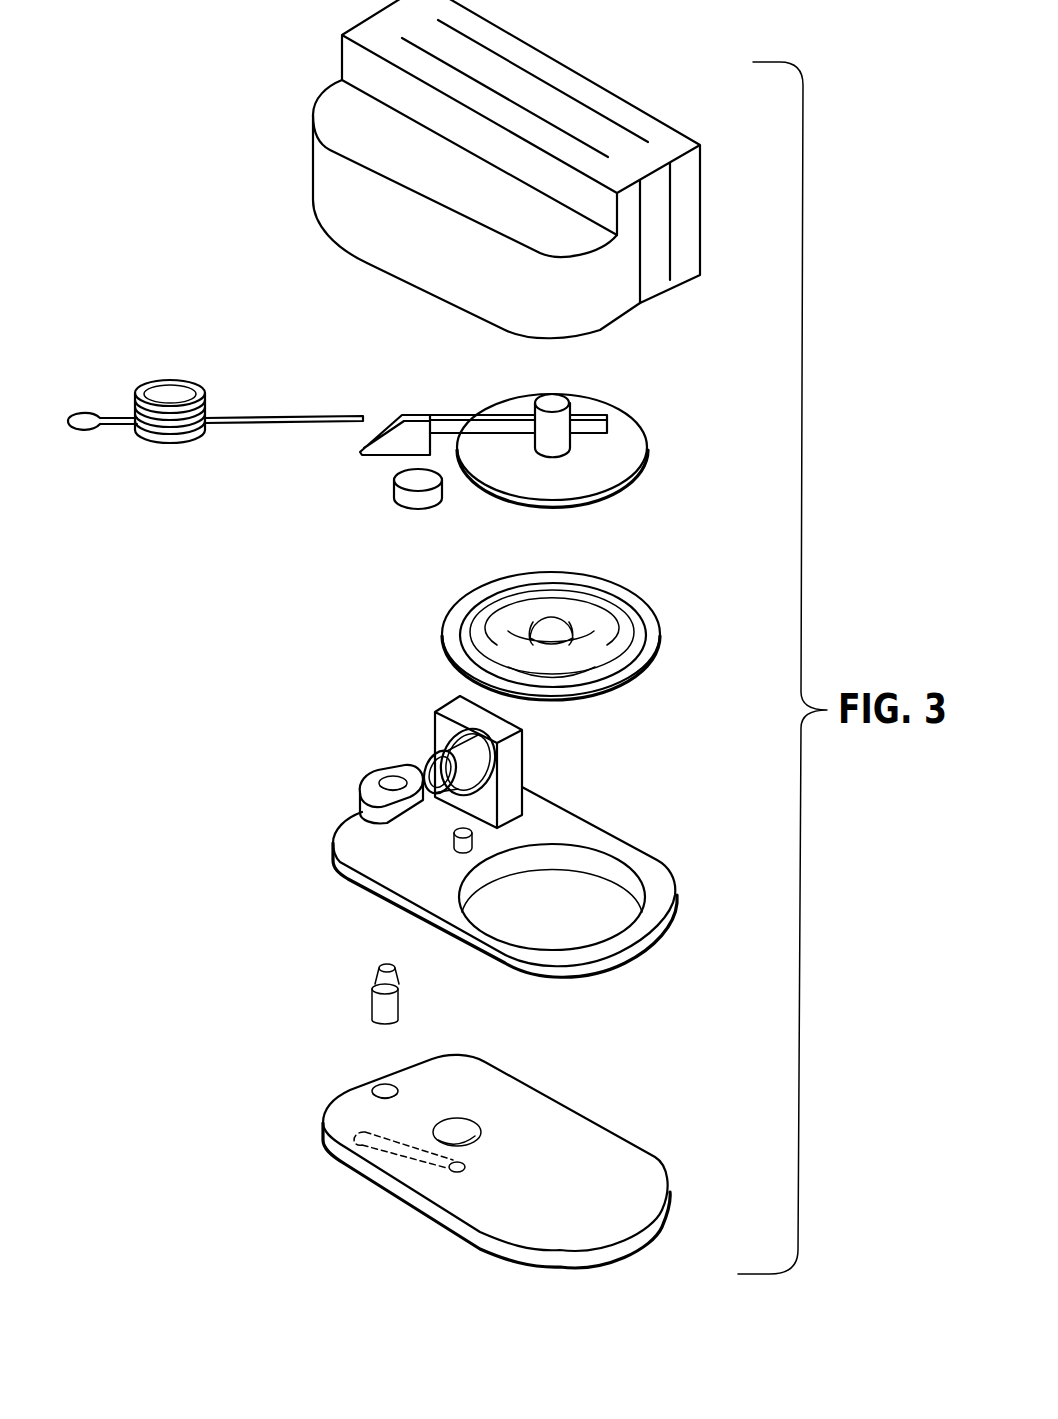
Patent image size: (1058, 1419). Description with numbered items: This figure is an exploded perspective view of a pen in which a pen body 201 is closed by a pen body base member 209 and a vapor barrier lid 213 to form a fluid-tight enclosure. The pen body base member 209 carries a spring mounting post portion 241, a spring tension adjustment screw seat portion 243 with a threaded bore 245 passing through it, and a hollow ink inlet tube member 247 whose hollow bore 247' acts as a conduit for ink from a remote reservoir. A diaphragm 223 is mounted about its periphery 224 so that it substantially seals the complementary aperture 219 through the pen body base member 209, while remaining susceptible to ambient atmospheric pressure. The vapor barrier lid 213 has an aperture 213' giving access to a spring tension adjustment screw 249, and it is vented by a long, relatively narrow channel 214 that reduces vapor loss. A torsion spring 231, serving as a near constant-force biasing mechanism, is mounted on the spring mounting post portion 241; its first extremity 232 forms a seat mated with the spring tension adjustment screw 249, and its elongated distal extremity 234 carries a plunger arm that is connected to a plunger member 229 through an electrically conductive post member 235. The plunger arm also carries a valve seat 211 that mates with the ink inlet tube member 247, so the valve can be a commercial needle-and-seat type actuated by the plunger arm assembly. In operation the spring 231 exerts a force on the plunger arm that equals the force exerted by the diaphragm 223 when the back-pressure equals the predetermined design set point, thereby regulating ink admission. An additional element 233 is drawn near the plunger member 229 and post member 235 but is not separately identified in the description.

The pen body 201 is at (707, 193).
The pen body base member 209 is at (648, 872).
The valve seat 211 is at (410, 508).
The vapor barrier lid 213 is at (506, 1161).
The aperture 213' is at (355, 1077).
The channel 214 is at (378, 1142).
The aperture 219 is at (572, 914).
The diaphragm 223 is at (653, 662).
The periphery 224 is at (641, 580).
The plunger member 229 is at (630, 455).
The torsion spring 231 is at (183, 380).
The first extremity 232 is at (83, 413).
The post 233 is at (568, 405).
The distal extremity 234 is at (247, 415).
The electrically conductive post member 235 is at (552, 398).
The spring mounting post portion 241 is at (452, 708).
The spring tension adjustment screw seat portion 243 is at (362, 798).
The threaded bore 245 is at (387, 780).
The hollow ink inlet tube member 247 is at (436, 849).
The hollow bore 247' is at (480, 1115).
The spring tension adjustment screw 249 is at (370, 1003).